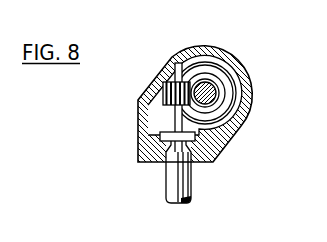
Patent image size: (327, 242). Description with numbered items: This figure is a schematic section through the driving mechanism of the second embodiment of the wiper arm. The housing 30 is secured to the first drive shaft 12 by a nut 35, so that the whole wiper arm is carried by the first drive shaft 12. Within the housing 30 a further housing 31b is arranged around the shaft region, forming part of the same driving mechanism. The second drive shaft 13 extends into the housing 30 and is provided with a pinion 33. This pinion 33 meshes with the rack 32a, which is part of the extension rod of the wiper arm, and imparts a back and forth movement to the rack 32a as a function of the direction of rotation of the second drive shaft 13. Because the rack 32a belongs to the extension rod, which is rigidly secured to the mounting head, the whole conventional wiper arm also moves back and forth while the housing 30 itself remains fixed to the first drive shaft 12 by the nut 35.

The housing 30 is at (232, 63).
The housing 31b is at (228, 90).
The rack 32a is at (210, 95).
The pinion 33 is at (165, 98).
The second drive shaft 13 is at (175, 118).
The nut 35 is at (161, 133).
The first drive shaft 12 is at (165, 192).